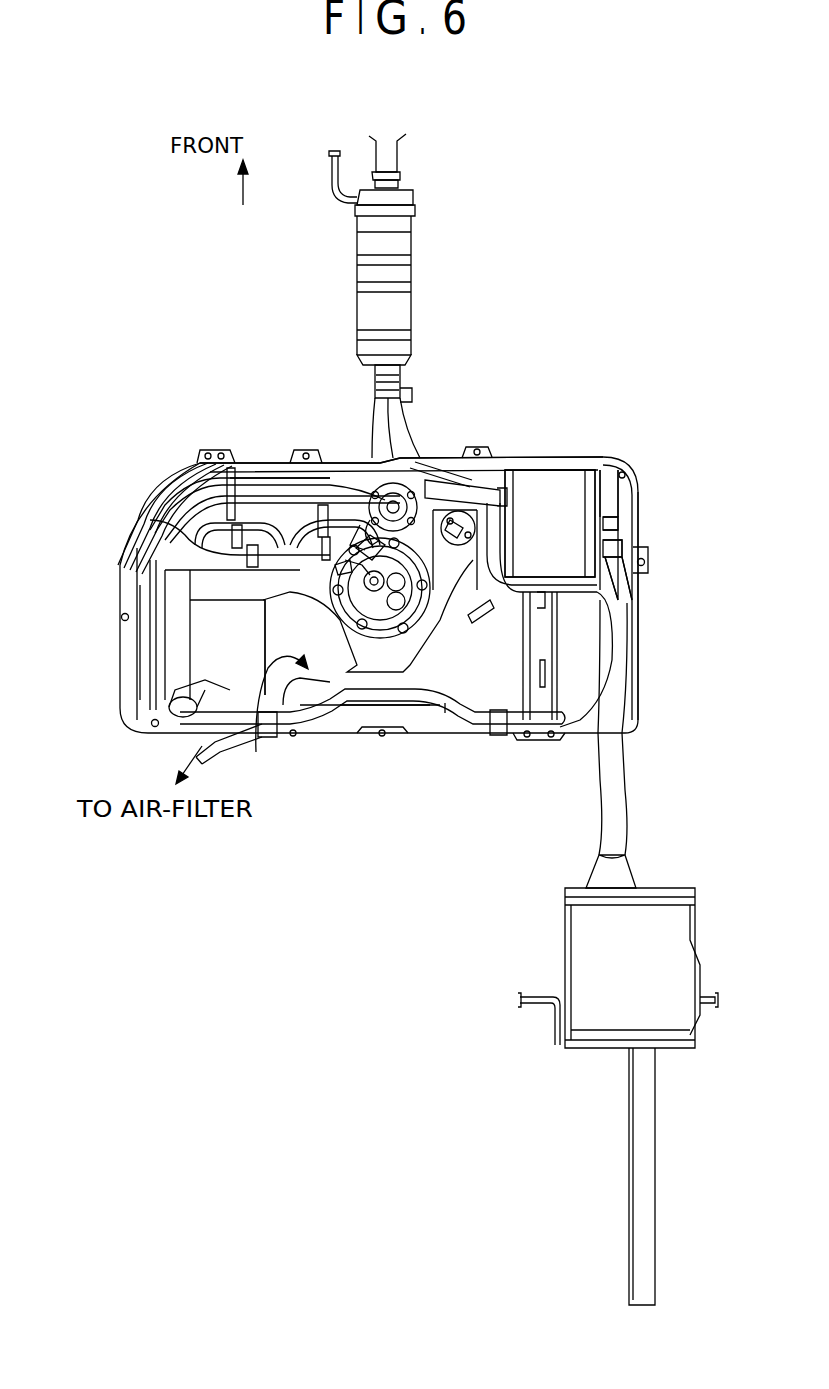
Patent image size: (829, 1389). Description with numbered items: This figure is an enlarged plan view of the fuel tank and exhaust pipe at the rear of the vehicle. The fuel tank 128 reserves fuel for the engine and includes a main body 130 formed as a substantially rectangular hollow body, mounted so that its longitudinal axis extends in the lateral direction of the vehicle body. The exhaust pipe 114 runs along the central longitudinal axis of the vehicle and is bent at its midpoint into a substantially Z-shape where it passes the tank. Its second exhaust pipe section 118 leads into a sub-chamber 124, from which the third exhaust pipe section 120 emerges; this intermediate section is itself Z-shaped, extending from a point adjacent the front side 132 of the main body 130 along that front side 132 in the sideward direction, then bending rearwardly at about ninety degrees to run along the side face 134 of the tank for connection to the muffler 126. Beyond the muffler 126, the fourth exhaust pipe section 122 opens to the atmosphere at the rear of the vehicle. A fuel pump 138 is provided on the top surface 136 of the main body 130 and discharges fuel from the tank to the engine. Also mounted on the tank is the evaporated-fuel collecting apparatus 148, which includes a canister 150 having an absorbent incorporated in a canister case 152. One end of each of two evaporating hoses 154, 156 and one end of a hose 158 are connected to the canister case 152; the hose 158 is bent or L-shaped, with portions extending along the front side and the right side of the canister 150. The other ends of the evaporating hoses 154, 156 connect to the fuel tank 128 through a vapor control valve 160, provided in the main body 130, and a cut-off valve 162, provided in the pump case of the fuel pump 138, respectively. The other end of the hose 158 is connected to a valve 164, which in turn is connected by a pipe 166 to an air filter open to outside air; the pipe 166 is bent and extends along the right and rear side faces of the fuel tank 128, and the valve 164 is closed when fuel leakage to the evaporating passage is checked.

The exhaust pipe 114 is at (625, 781).
The second exhaust pipe section 118 is at (392, 152).
The third exhaust pipe section 120 is at (616, 830).
The fourth exhaust pipe section 122 is at (637, 1156).
The sub-chamber 124 is at (405, 236).
The muffler 126 is at (573, 960).
The fuel tank 128 is at (125, 699).
The main body 130 is at (218, 622).
The front side 132 is at (258, 455).
The side face 134 is at (643, 592).
The top surface 136 is at (280, 720).
The fuel pump 138 is at (383, 622).
The evaporated-fuel collecting apparatus 148 is at (598, 413).
The canister 150 is at (548, 463).
The canister case 152 is at (578, 510).
The evaporating hose 154 is at (486, 480).
The evaporating hose 156 is at (465, 472).
The hose 158 is at (607, 470).
The vapor control valve 160 is at (386, 498).
The cut-off valve 162 is at (456, 700).
The valve 164 is at (632, 538).
The pipe 166 is at (446, 712).